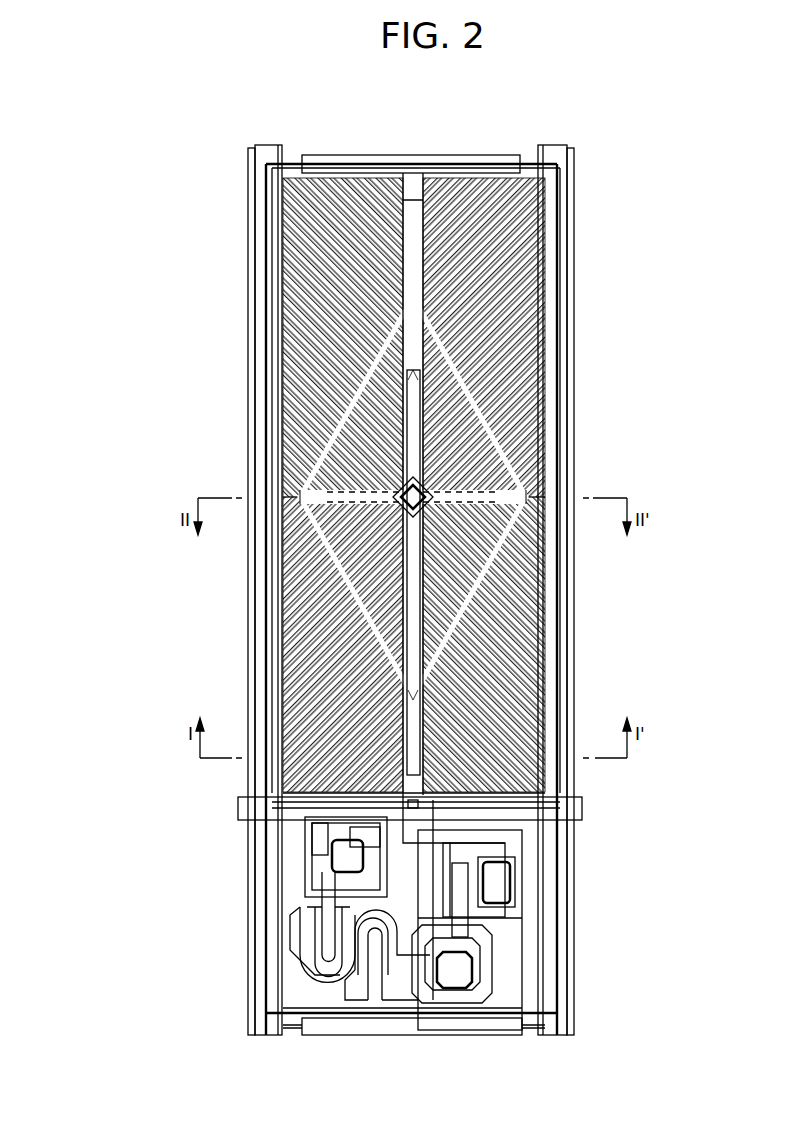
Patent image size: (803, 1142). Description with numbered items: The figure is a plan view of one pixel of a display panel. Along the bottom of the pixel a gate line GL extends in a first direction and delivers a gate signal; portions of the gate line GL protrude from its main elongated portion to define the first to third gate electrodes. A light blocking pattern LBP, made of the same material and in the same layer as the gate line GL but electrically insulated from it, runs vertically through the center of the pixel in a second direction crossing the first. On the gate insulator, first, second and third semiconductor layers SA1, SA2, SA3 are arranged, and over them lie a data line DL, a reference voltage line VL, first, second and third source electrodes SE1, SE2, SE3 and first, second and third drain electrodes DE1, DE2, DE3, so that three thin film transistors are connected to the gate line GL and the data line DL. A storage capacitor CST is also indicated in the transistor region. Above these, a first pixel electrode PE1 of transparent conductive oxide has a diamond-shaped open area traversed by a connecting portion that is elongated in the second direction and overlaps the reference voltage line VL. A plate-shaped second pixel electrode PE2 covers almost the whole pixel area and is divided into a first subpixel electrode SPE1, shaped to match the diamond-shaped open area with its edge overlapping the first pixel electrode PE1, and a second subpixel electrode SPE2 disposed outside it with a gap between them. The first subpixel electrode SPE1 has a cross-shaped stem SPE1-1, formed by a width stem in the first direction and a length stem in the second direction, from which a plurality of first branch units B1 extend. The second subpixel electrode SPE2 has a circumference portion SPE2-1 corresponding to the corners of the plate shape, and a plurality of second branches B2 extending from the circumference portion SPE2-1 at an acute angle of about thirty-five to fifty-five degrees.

The reference voltage line VL is at (412, 155).
The data line DL is at (253, 273).
The light blocking pattern LBP is at (425, 260).
The first pixel electrode PE1 is at (473, 377).
The second pixel electrode PE2 is at (220, 485).
The first subpixel electrode SPE1 is at (245, 369).
The cross-shaped stem SPE1-1 is at (332, 497).
The first branch units B1 is at (327, 514).
The second branches B2 is at (305, 593).
The second subpixel electrode SPE2 is at (245, 644).
The circumference portion SPE2-1 is at (275, 623).
The storage capacitor CST is at (573, 808).
The first drain electrode DE1 is at (322, 865).
The first semiconductor layer SA1 is at (317, 927).
The first source electrode SE1 is at (303, 945).
The second drain electrode DE2 is at (378, 955).
The second semiconductor layer SA2 is at (364, 952).
The second source electrode SE2 is at (353, 948).
The third drain electrode DE3 is at (442, 877).
The third semiconductor layer SA3 is at (450, 890).
The third source electrode SE3 is at (462, 915).
The gate line GL is at (573, 934).